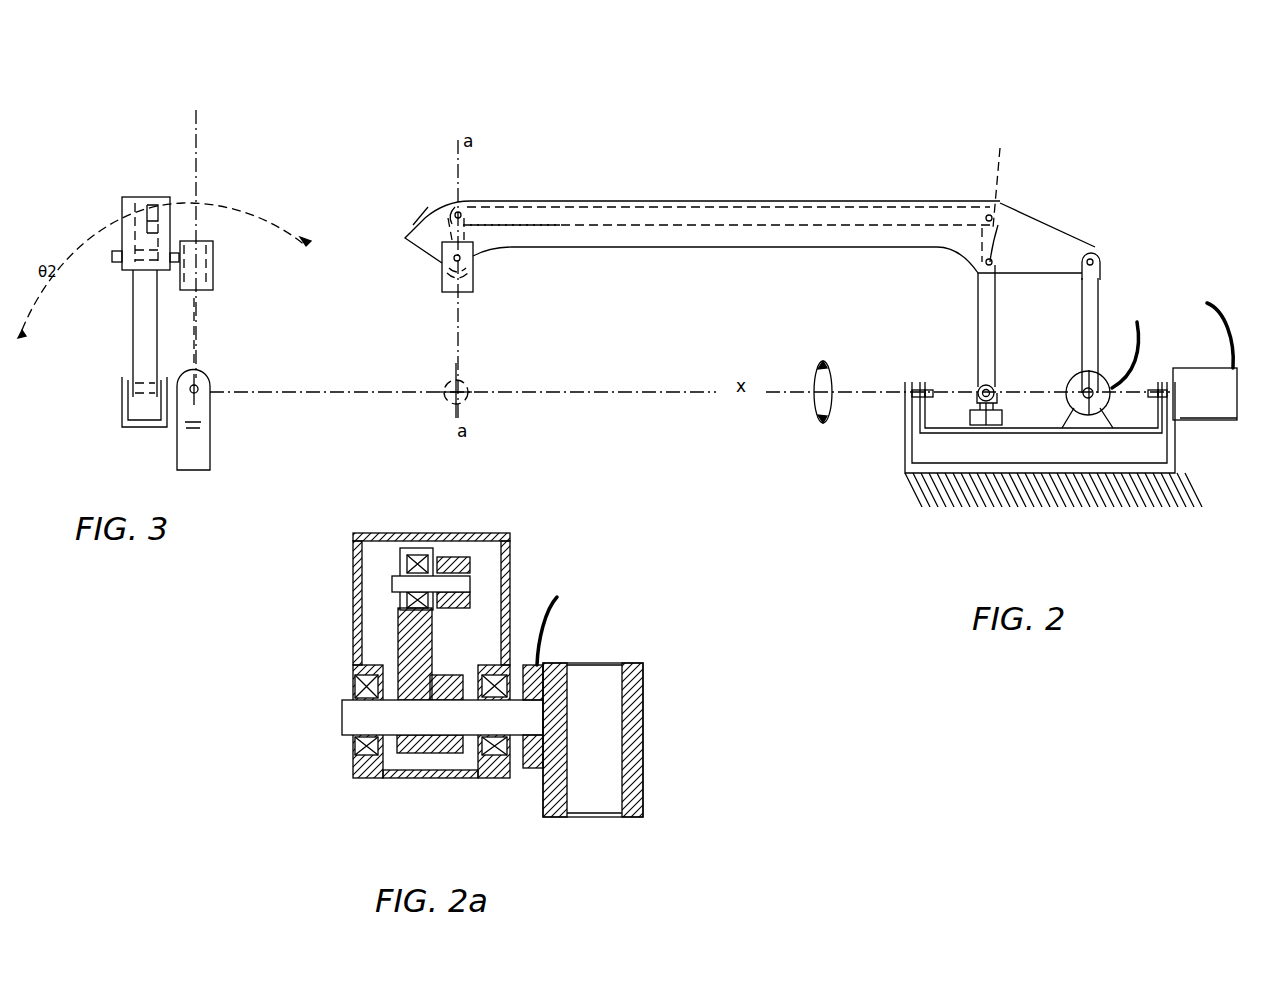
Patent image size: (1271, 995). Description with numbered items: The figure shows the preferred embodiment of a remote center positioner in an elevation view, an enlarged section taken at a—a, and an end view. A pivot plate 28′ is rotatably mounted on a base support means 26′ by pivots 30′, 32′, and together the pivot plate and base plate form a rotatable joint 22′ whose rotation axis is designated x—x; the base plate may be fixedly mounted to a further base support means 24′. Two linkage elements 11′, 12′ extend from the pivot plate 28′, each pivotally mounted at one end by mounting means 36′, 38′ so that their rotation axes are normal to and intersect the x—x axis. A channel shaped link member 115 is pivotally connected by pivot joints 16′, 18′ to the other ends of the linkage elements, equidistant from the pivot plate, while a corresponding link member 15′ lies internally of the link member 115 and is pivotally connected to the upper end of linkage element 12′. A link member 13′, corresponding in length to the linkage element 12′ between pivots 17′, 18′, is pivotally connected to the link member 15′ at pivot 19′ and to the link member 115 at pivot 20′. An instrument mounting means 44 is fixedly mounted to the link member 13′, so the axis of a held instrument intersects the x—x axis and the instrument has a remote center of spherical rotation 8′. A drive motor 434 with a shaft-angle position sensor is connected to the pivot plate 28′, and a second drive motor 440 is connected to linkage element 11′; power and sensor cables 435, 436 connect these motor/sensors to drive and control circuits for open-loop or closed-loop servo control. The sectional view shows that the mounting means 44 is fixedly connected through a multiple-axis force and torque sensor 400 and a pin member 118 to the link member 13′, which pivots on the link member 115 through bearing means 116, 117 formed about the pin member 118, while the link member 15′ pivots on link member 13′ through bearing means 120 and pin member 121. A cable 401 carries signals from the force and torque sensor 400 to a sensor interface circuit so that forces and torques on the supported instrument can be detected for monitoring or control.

In FIG. 3, the channel shaped link member 115 is at (128, 197).
In FIG. 2, the channel shaped link member 115 is at (677, 247).
In FIG. 2A, the channel shaped link member 115 is at (507, 555).
In FIG. 3, the instrument mounting means 44 is at (208, 290).
In FIG. 2, the instrument mounting means 44 is at (470, 292).
In FIG. 2A, the instrument mounting means 44 is at (646, 690).
In FIG. 3, the pivot plate 28′ is at (122, 428).
In FIG. 2, the pivot plate 28′ is at (1010, 433).
In FIG. 2, the link member 13′ is at (428, 205).
In FIG. 2A, the link member 13′ is at (397, 638).
In FIG. 2, the pivot 19′ is at (466, 205).
In FIG. 2, the pivot 20′ is at (442, 267).
In FIG. 2, the link member 15′ is at (550, 223).
In FIG. 2A, the link member 15′ is at (470, 558).
In FIG. 2, the remote center of spherical rotation 8′ is at (447, 399).
In FIG. 2, the pivot 17′ is at (1002, 143).
In FIG. 2, the pivot joint 18′ is at (992, 255).
In FIG. 2, the pivot joint 16′ is at (1094, 254).
In FIG. 2, the mounting means 36′ is at (977, 387).
In FIG. 2, the linkage element 11′ is at (1080, 310).
In FIG. 2, the linkage element 12′ is at (998, 329).
In FIG. 2, the power and sensor cable 435 is at (1213, 300).
In FIG. 2, the power and sensor cable 436 is at (1132, 340).
In FIG. 2, the pivot 30′ is at (1160, 348).
In FIG. 2, the pivot 32′ is at (915, 380).
In FIG. 2, the rotatable joint 22′ is at (877, 440).
In FIG. 2, the base support means 26′ is at (902, 463).
In FIG. 2, the base support means 24′ is at (922, 493).
In FIG. 2, the mounting means 38′ is at (1088, 417).
In FIG. 2, the second drive motor 440 is at (1110, 427).
In FIG. 2, the drive motor 434 is at (1231, 420).
In FIG. 2A, the bearing means 120 is at (400, 557).
In FIG. 2A, the pin member 121 is at (392, 582).
In FIG. 2A, the bearing means 117 is at (511, 668).
In FIG. 2A, the cable 401 is at (540, 623).
In FIG. 2A, the bearing means 116 is at (353, 692).
In FIG. 2A, the pin member 118 is at (342, 705).
In FIG. 2A, the multiple-axis force and torque sensor 400 is at (537, 772).